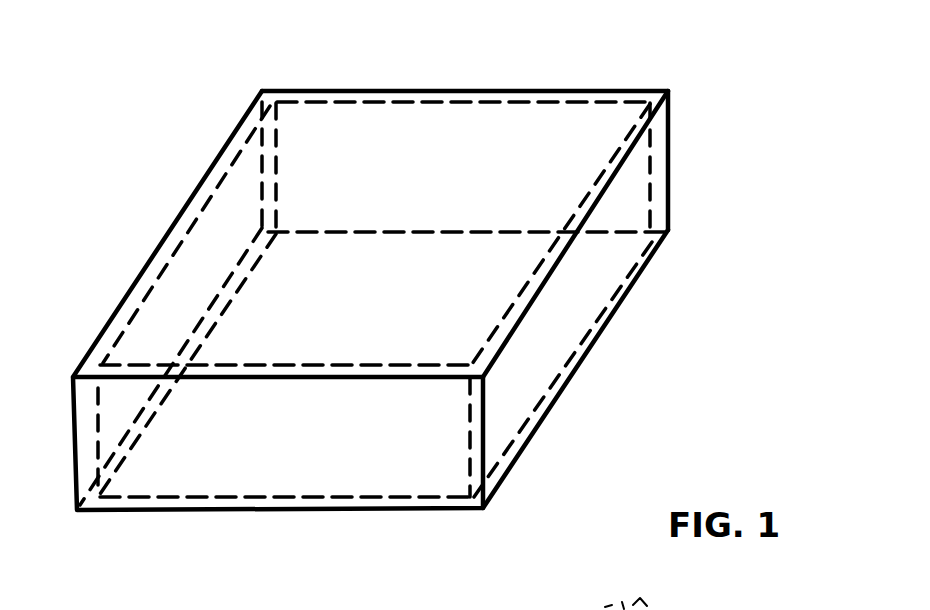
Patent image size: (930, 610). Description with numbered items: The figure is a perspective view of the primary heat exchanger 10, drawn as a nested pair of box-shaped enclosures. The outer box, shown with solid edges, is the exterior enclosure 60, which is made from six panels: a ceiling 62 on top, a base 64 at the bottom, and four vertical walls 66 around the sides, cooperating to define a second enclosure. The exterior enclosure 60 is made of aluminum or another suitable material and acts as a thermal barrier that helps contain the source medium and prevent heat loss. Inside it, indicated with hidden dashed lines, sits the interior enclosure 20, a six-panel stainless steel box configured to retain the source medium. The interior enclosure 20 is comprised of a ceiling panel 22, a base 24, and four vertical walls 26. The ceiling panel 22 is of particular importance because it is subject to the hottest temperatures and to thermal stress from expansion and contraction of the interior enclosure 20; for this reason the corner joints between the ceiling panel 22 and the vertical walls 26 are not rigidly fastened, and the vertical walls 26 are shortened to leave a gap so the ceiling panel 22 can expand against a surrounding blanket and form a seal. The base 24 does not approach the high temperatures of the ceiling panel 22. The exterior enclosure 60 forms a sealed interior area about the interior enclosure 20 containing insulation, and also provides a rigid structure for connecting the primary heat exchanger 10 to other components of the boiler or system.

The primary heat exchanger 10 is at (180, 115).
The ceiling panel 22 is at (322, 90).
The ceiling 62 is at (582, 89).
The vertical walls 66 is at (676, 136).
The vertical walls 26 is at (673, 238).
The interior enclosure 20 is at (606, 336).
The base 24 is at (562, 403).
The exterior enclosure 60 is at (547, 427).
The base 64 is at (466, 513).